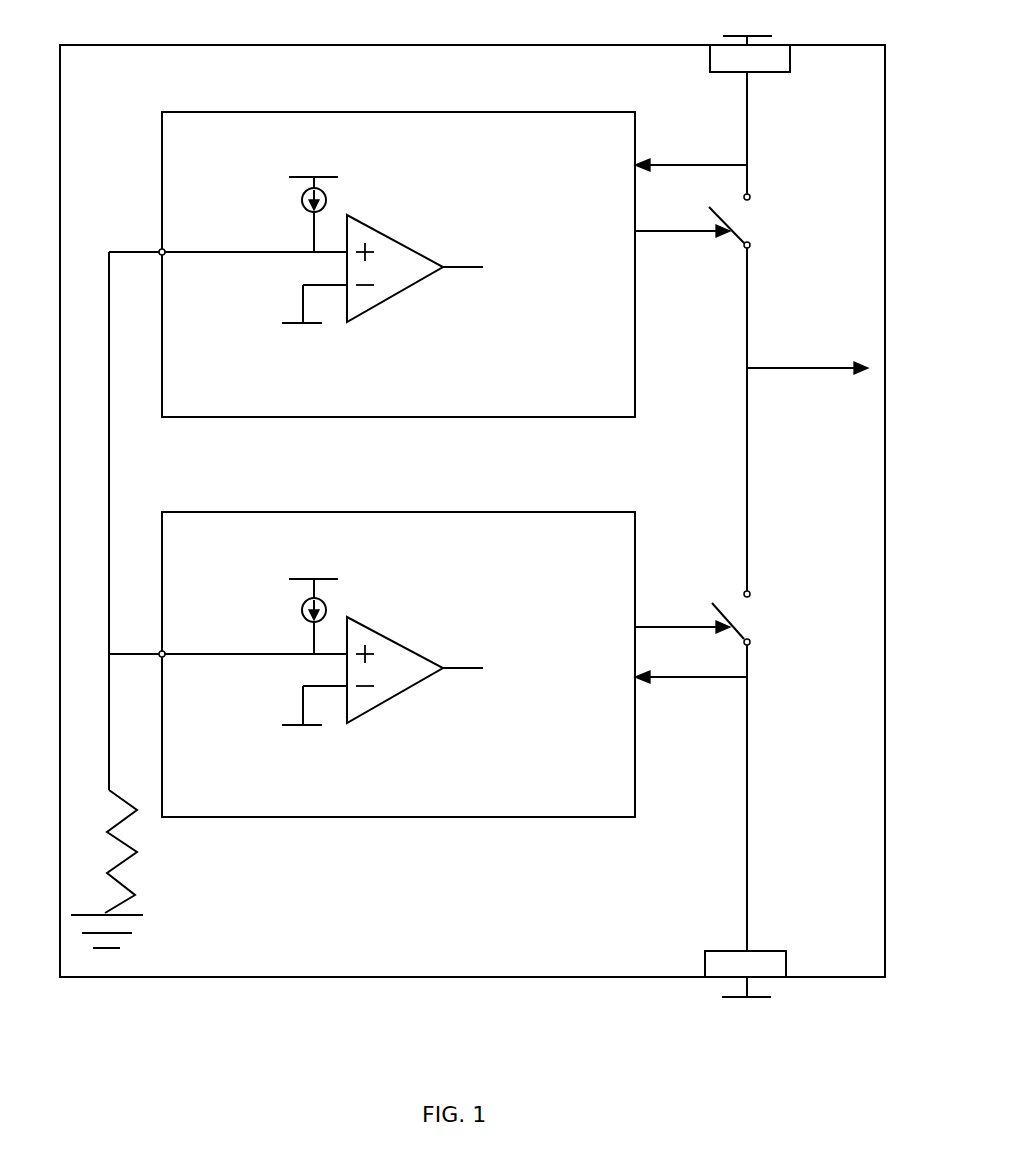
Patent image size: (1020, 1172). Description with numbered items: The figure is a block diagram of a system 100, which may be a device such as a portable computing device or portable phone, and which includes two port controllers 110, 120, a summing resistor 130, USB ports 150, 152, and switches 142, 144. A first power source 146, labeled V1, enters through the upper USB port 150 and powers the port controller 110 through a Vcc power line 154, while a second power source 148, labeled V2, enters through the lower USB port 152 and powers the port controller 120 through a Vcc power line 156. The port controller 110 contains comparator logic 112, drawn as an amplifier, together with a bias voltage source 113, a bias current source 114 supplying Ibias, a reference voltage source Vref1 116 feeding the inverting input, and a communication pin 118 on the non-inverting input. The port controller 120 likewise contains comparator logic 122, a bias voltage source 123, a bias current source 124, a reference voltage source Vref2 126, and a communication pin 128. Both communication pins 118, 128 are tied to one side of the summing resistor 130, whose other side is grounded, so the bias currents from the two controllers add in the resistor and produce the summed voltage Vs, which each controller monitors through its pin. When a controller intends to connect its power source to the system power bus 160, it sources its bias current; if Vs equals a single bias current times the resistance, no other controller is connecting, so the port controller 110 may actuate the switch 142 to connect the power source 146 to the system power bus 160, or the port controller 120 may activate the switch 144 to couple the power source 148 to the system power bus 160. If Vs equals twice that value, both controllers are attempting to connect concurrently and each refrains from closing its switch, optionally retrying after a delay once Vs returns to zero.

The system 100 is at (110, 83).
The port controller 110 is at (207, 142).
The comparator logic 112 is at (415, 258).
The bias voltage source 113 is at (344, 163).
The bias current source 114 is at (360, 208).
The reference voltage source Vref1 116 is at (287, 315).
The communication pin 118 is at (215, 235).
The port controller 120 is at (204, 539).
The comparator logic 122 is at (416, 662).
The bias voltage source 123 is at (349, 570).
The bias current source 124 is at (360, 613).
The reference voltage source Vref2 126 is at (287, 716).
The communication pin 128 is at (228, 632).
The summing resistor 130 is at (149, 600).
The switch 142 is at (729, 394).
The switch 144 is at (730, 771).
The first power source 146 is at (784, 25).
The second power source 148 is at (796, 1016).
The USB port 150 is at (786, 121).
The USB port 152 is at (781, 943).
The Vcc power line 154 is at (671, 147).
The Vcc power line 156 is at (673, 693).
The system power bus 160 is at (807, 352).